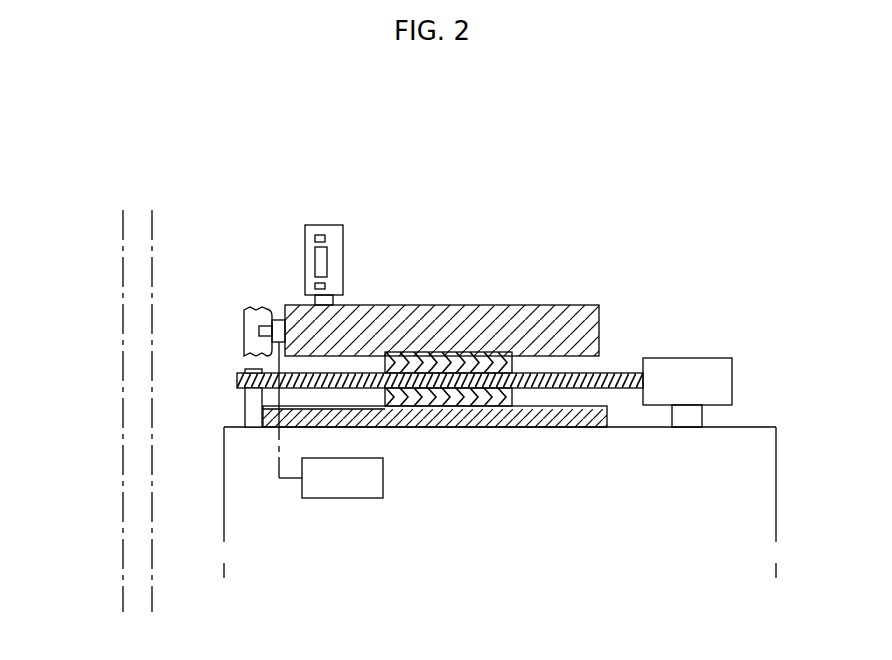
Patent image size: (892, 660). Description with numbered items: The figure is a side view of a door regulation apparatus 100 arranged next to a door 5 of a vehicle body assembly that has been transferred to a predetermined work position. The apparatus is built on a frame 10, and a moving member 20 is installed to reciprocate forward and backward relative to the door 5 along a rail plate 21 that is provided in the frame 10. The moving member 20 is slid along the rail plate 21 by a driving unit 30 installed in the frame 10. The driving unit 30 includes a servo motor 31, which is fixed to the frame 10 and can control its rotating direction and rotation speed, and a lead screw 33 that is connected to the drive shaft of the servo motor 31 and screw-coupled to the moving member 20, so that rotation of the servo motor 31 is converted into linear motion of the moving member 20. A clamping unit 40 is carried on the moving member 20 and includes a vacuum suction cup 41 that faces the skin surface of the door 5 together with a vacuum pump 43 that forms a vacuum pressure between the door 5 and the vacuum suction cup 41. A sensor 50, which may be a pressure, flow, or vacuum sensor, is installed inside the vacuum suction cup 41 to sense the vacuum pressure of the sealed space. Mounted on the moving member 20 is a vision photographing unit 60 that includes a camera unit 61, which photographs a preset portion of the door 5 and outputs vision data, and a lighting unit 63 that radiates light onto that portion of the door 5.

The door 5 is at (122, 371).
The frame 10 is at (763, 426).
The moving member 20 is at (588, 284).
The rail plate 21 is at (470, 428).
The driving unit 30 is at (558, 401).
The servo motor 31 is at (687, 358).
The lead screw 33 is at (552, 384).
The clamping unit 40 is at (283, 386).
The vacuum suction cup 41 is at (246, 309).
The vacuum pump 43 is at (340, 500).
The sensor 50 is at (242, 311).
The vision photographing unit 60 is at (370, 234).
The camera unit 61 is at (327, 250).
The lighting unit 63 is at (320, 235).
The door regulation apparatus 100 is at (476, 147).